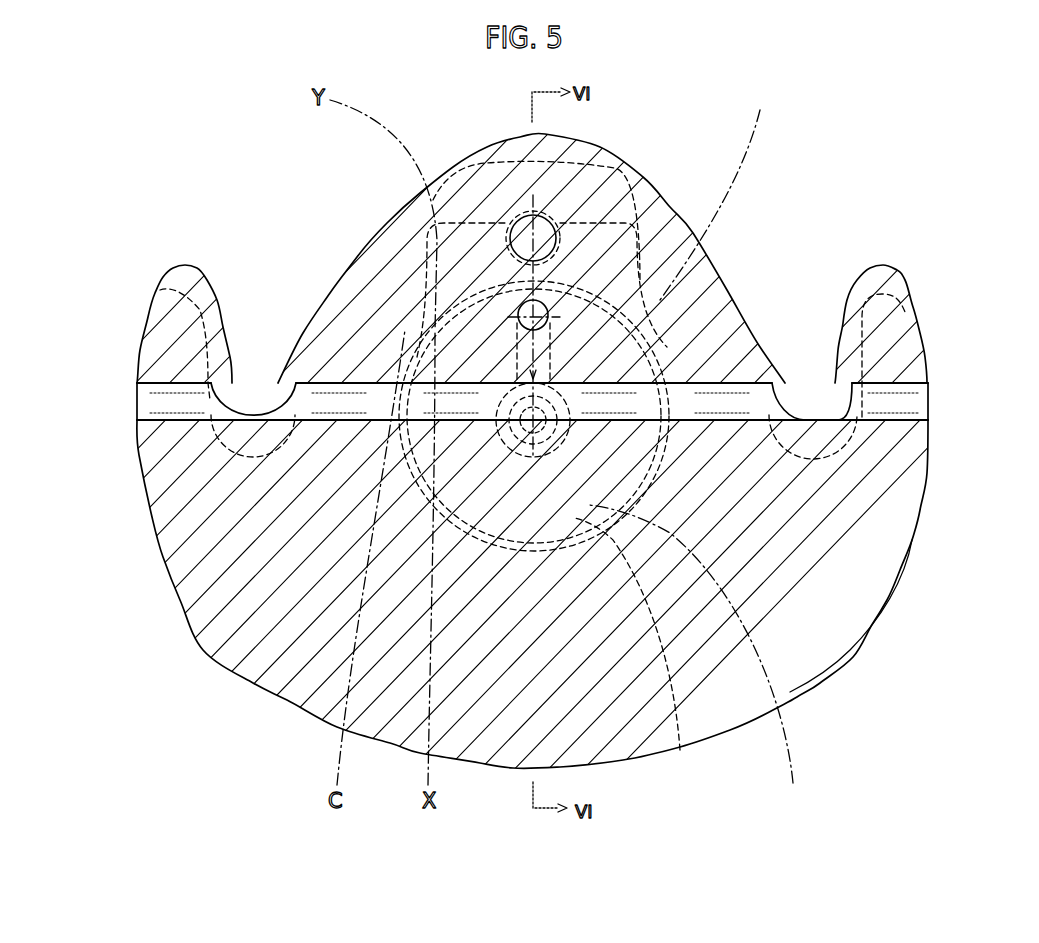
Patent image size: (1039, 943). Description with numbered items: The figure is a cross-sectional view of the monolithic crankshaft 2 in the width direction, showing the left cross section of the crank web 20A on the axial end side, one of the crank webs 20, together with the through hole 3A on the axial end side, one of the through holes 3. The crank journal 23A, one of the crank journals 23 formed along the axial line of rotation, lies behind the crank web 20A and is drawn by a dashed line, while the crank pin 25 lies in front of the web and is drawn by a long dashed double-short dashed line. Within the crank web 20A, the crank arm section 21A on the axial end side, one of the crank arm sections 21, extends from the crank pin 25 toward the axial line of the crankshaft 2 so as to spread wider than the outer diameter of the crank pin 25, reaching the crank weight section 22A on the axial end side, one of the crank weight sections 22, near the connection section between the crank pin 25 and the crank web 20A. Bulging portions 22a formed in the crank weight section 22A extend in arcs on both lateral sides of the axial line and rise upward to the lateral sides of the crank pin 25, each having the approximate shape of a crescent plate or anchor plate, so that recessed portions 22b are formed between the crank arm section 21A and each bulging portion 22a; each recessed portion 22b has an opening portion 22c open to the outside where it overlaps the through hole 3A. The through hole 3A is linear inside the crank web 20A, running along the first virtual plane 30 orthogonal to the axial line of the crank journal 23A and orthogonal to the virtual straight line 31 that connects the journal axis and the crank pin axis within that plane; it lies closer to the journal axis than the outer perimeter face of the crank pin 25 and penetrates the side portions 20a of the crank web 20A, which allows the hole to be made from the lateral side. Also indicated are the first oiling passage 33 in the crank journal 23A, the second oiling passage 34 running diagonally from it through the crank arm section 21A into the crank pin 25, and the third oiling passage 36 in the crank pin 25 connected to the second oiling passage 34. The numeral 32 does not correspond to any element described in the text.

The crankshaft 2 is at (678, 187).
The through holes 3 is at (576, 411).
The through hole on the axial end side 3A is at (877, 388).
The crank webs 20 is at (582, 594).
The crank web on the axial end side 20A is at (907, 563).
The side portions 20a is at (928, 440).
The crank arm sections 21 is at (571, 235).
The crank arm section on the axial end side 21A is at (743, 312).
The crank weight sections 22 is at (908, 659).
The crank weight section on the axial end side 22A is at (815, 683).
The bulging portions 22a is at (903, 283).
The recessed portions 22b is at (809, 374).
The opening portion 22c is at (814, 396).
The crank journals 23 is at (715, 659).
The crank journal on the axial end side 23A is at (695, 659).
The crank pin 25 is at (718, 193).
The first virtual plane 30 is at (554, 326).
The virtual straight line 31 is at (455, 378).
The rotation trajectory 32 is at (410, 377).
The first oiling passage 33 is at (680, 750).
The second oiling passage 34 is at (490, 375).
The third oiling passage 36 is at (545, 229).